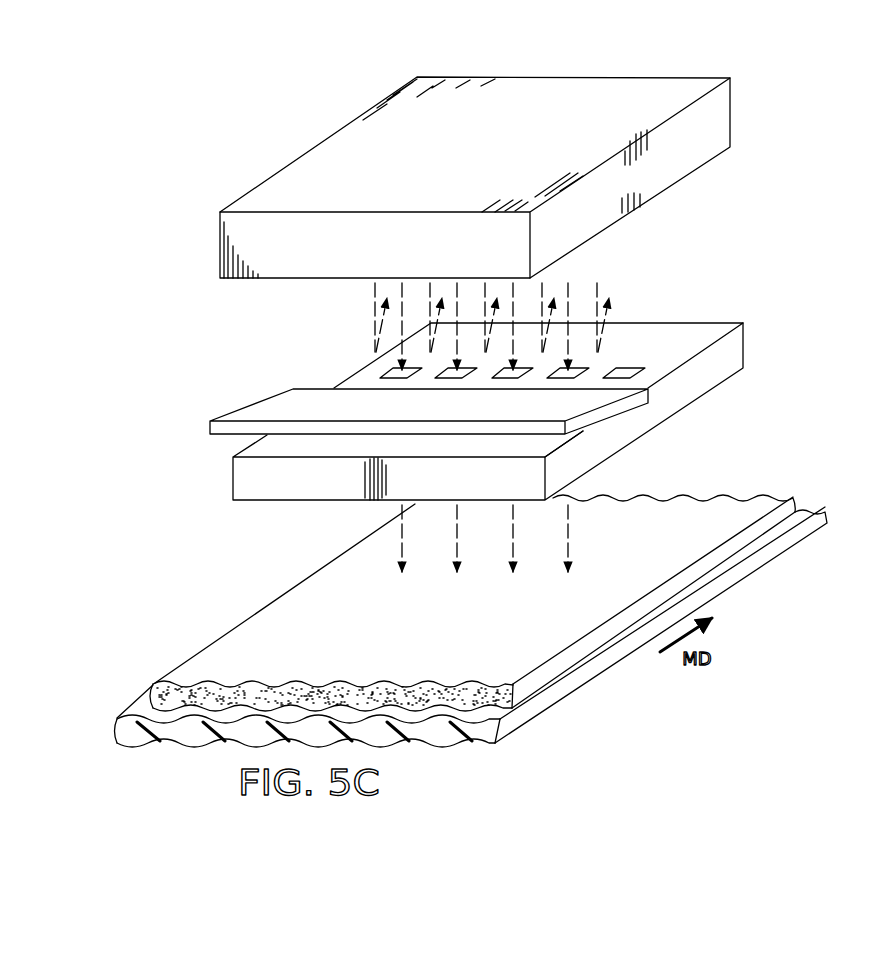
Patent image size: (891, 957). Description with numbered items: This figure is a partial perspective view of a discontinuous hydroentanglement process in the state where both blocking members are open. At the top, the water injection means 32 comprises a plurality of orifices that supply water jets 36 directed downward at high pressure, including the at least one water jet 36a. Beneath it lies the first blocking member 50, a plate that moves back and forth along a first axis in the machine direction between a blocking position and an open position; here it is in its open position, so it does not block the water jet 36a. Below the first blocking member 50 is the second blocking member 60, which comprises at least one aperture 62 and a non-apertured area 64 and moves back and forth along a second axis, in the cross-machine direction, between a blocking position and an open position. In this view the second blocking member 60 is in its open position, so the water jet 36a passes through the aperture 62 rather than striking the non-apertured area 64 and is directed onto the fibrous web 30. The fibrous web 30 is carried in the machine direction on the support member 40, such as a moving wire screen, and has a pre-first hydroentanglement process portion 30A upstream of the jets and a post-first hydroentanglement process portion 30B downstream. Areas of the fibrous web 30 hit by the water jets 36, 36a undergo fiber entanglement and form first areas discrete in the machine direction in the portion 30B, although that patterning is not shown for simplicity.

The water injection means 32 is at (557, 88).
The water jets 36 is at (448, 285).
The at least one water jet 36a is at (393, 283).
The first blocking member 50 is at (275, 407).
The second blocking member 60 is at (333, 502).
The aperture 62 is at (623, 380).
The non-apertured area 64 is at (682, 335).
The fibrous web 30 is at (280, 600).
The pre-first hydroentanglement process portion 30A is at (505, 668).
The post-first hydroentanglement process portion 30B is at (680, 503).
The support member 40 is at (182, 742).